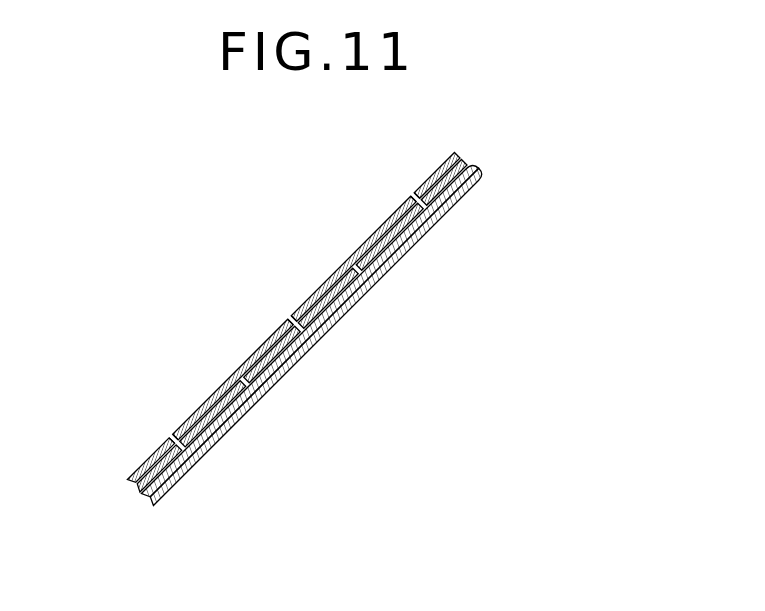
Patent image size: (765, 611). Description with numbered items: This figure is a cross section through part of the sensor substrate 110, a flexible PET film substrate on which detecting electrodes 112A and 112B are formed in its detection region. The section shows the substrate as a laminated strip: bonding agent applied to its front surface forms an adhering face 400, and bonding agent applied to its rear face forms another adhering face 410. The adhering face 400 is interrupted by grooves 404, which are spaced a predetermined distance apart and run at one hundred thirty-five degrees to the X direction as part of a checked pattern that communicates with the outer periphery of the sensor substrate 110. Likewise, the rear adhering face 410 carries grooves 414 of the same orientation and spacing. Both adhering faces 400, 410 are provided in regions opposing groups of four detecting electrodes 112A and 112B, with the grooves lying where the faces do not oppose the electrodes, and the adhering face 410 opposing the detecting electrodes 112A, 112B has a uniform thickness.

The sensor substrate 110 is at (336, 304).
The detecting electrode 112A is at (343, 312).
The detecting electrode 112B is at (422, 240).
The adhering face 400 is at (375, 233).
The grooves 404 is at (290, 315).
The adhering face 410 is at (329, 304).
The grooves 414 is at (373, 280).